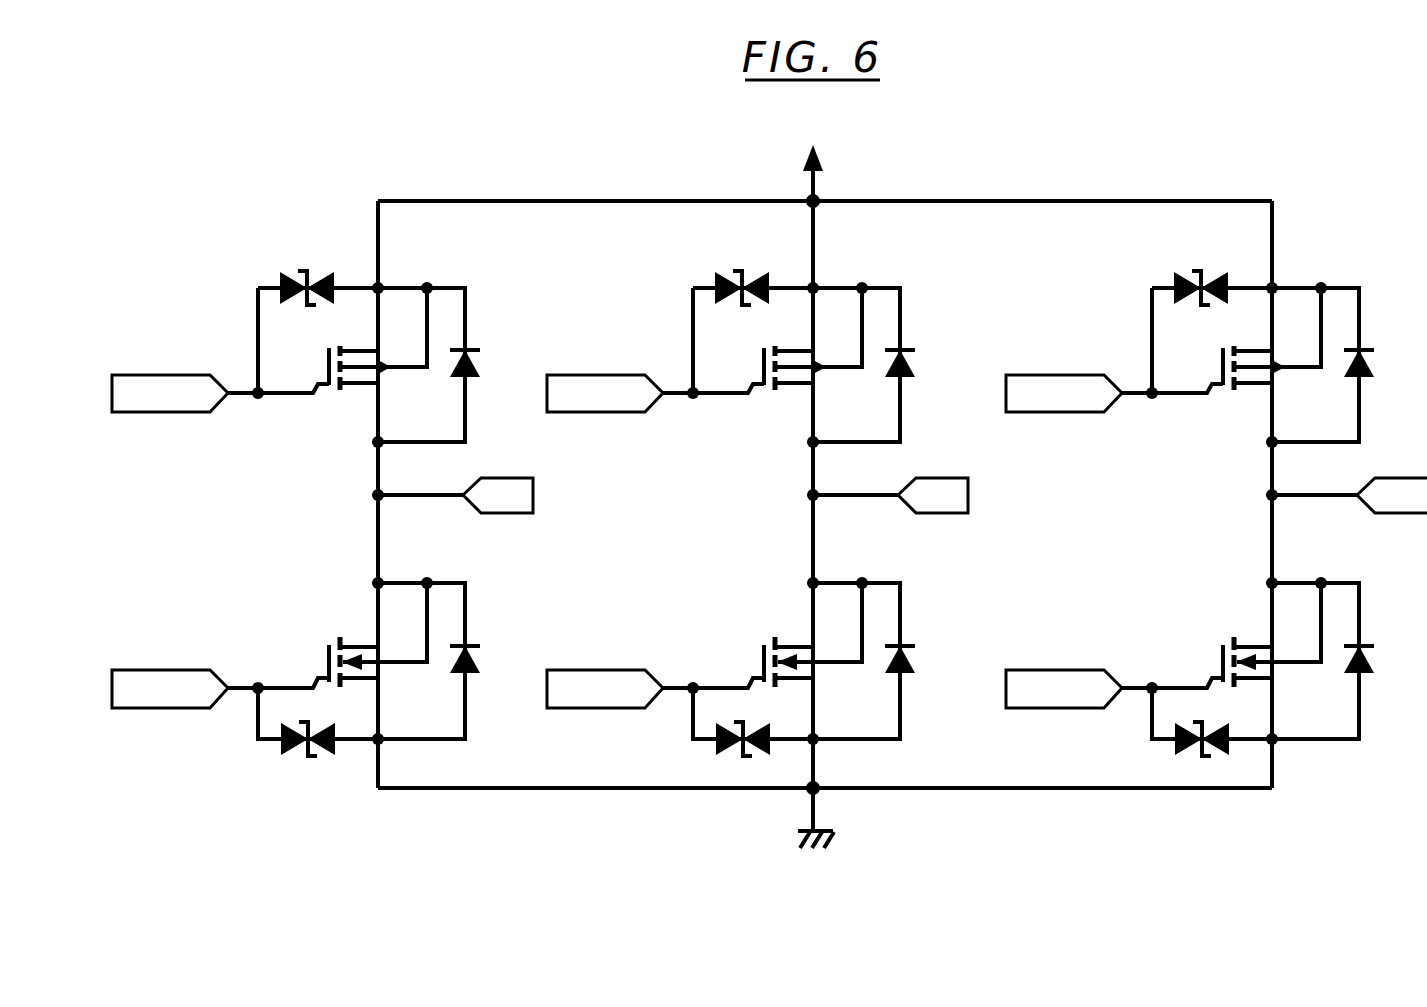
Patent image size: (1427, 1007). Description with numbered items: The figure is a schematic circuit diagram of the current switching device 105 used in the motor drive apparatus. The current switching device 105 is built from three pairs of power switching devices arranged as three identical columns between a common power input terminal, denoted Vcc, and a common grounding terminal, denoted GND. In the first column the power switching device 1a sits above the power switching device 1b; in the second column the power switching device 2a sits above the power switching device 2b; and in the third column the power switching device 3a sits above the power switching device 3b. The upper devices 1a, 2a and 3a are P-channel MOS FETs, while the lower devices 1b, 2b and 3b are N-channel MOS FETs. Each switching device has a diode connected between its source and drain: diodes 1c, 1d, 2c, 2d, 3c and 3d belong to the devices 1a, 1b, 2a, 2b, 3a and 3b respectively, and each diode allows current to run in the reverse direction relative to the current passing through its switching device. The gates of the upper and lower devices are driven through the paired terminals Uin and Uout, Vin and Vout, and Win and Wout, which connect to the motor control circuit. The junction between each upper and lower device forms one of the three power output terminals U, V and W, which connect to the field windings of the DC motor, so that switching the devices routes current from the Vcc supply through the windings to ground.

The current switching device 105 is at (1075, 158).
The power switching device 1a is at (355, 402).
The power switching device 1b is at (356, 634).
The diode 1c is at (483, 359).
The diode 1d is at (483, 656).
The power switching device 2a is at (812, 392).
The power switching device 2b is at (812, 636).
The diode 2c is at (924, 357).
The diode 2d is at (926, 652).
The power switching device 3a is at (1271, 392).
The power switching device 3b is at (1271, 636).
The diode 3c is at (1383, 357).
The diode 3d is at (1385, 652).